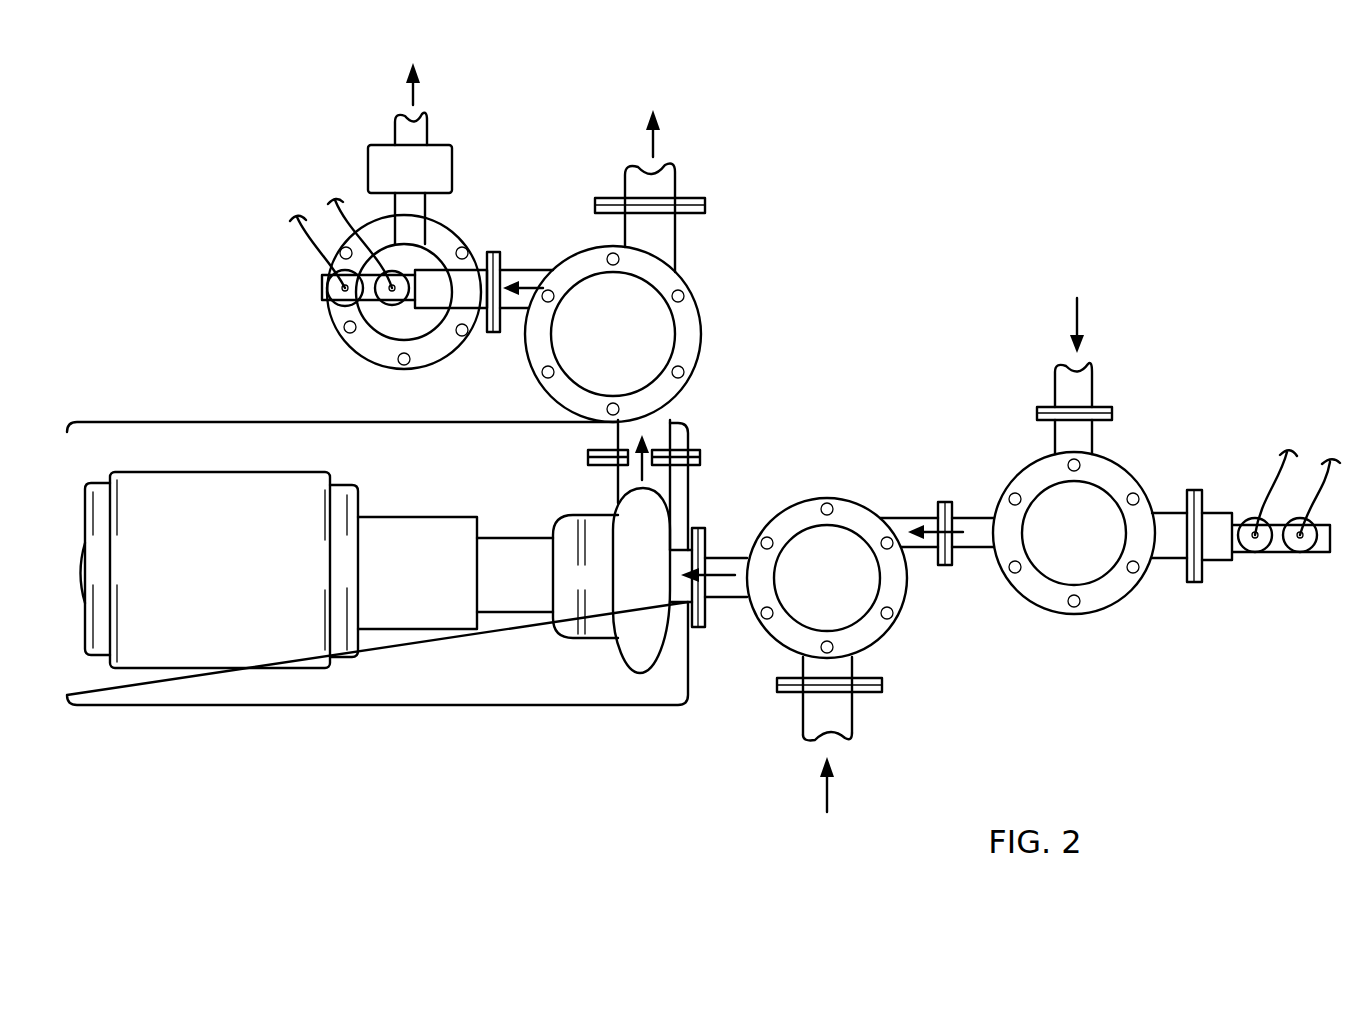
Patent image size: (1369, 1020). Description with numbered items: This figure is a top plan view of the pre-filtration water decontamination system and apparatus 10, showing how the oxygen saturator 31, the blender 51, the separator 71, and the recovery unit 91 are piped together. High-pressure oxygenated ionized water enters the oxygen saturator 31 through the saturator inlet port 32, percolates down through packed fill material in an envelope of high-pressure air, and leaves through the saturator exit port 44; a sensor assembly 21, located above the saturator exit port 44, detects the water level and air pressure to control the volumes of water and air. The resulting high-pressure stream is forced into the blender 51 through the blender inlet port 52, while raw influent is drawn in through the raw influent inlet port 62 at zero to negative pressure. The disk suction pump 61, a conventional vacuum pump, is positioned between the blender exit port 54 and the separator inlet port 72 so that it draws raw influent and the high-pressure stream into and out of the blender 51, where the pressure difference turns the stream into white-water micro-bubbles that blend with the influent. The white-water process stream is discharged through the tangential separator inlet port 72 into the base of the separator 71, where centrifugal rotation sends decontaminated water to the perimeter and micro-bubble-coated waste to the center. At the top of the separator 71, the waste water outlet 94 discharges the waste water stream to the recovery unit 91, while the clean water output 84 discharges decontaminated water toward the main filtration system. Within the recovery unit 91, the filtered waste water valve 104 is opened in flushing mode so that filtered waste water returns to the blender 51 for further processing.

The pre-filtration water decontamination system and apparatus 10 is at (825, 303).
The sensor assembly 21 is at (332, 310).
The oxygen saturator 31 is at (1100, 487).
The saturator inlet port 32 is at (1093, 400).
The saturator exit port 44 is at (977, 548).
The blender 51 is at (844, 592).
The blender inlet port 52 is at (907, 514).
The blender exit port 54 is at (725, 600).
The disk suction pump 61 is at (241, 589).
The raw influent inlet port 62 is at (833, 713).
The separator 71 is at (630, 349).
The separator inlet port 72 is at (675, 593).
The clean water output 84 is at (668, 186).
The recovery unit 91 is at (360, 358).
The waste water outlet 94 is at (535, 268).
The filtered waste water valve 104 is at (386, 184).